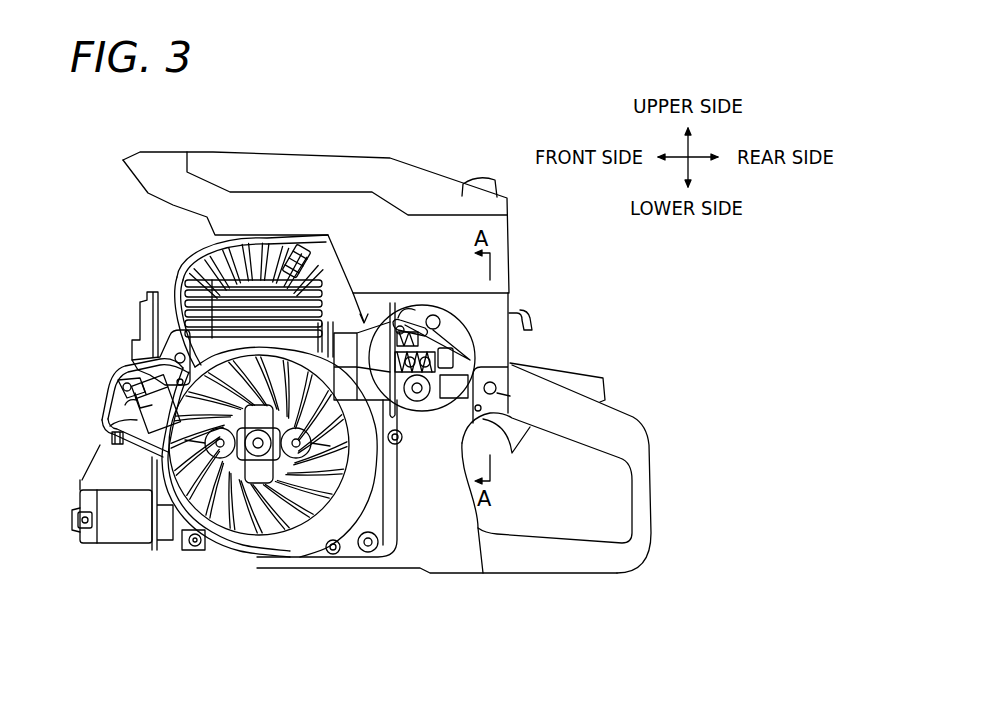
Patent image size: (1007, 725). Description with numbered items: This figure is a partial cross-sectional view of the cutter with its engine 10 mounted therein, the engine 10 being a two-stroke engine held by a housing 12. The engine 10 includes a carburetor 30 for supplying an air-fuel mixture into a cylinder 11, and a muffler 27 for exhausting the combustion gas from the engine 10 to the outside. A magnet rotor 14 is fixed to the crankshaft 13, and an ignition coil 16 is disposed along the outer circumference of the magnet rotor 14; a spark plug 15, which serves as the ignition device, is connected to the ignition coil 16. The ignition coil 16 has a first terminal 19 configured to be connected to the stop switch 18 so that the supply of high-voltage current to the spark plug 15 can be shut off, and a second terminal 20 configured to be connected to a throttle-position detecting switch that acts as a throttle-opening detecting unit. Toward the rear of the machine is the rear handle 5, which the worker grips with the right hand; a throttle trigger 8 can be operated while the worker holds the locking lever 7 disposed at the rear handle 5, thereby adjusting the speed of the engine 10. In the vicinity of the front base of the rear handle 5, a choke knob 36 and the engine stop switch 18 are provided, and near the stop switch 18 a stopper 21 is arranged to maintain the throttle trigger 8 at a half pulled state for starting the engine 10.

The rear handle 5 is at (645, 480).
The locking lever 7 is at (603, 378).
The throttle trigger 8 is at (519, 452).
The engine 10 is at (318, 273).
The cylinder 11 is at (198, 283).
The housing 12 is at (350, 548).
The crankshaft 13 is at (252, 450).
The magnet rotor 14 is at (248, 535).
The spark plug 15 is at (282, 256).
The ignition coil 16 is at (142, 426).
The engine stop switch 18 is at (517, 363).
The first terminal 19 is at (137, 360).
The second terminal 20 is at (143, 393).
The stopper 21 is at (497, 395).
The muffler 27 is at (82, 480).
The carburetor 30 is at (440, 322).
The choke knob 36 is at (530, 324).